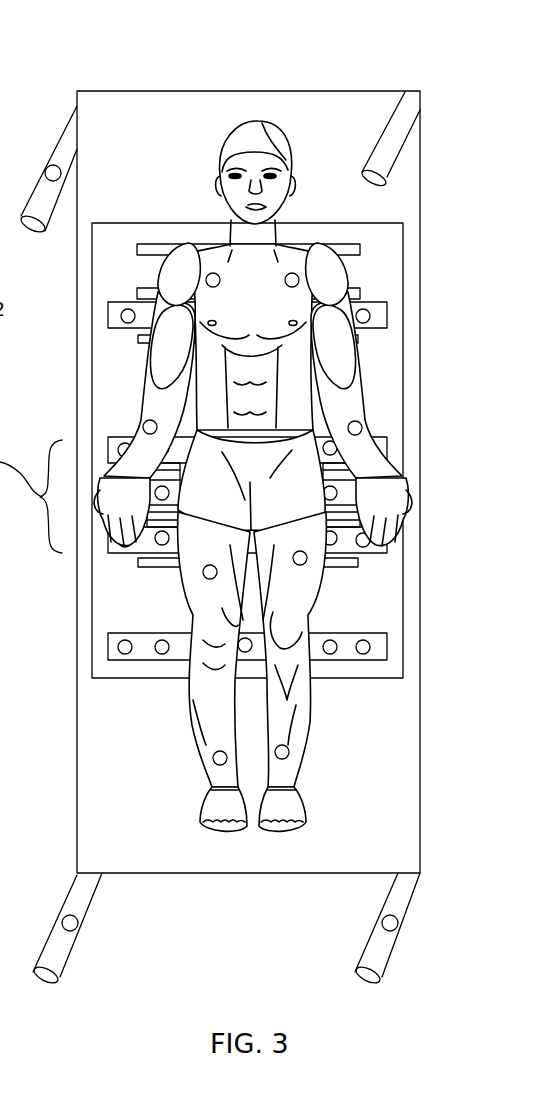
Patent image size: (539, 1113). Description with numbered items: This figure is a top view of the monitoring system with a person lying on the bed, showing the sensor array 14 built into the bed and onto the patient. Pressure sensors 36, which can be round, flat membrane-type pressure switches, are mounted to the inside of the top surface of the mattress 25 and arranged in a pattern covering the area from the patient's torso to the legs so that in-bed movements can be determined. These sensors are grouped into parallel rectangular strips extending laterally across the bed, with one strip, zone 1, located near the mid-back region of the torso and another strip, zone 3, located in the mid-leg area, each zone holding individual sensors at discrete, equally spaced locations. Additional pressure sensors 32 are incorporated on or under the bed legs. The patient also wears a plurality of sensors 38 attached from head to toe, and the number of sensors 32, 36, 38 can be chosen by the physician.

The zone 1 is at (108, 302).
The zone 3 is at (110, 625).
The sensor array 14 is at (310, 193).
The mattress 25 is at (118, 812).
The pressure sensors 32 is at (51, 166).
The pressure sensors 36 is at (369, 311).
The sensors 38 is at (207, 274).